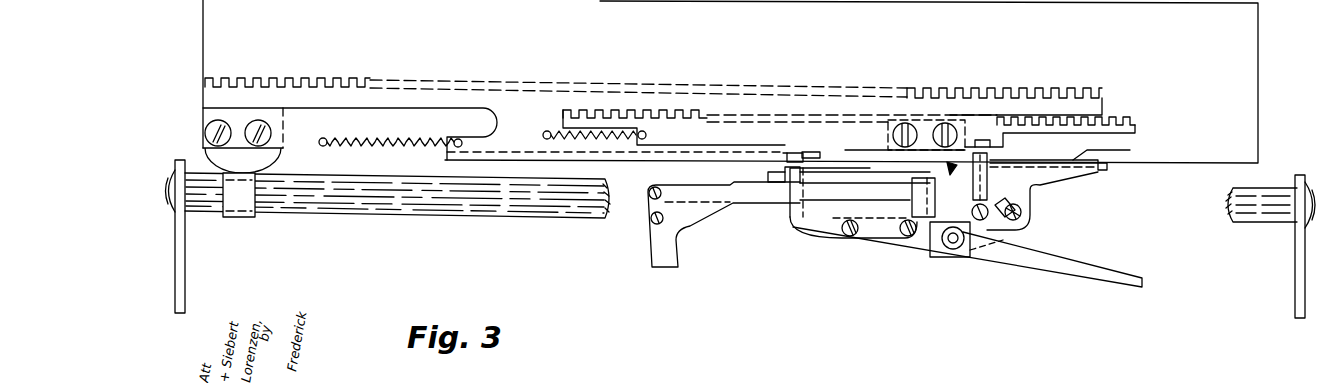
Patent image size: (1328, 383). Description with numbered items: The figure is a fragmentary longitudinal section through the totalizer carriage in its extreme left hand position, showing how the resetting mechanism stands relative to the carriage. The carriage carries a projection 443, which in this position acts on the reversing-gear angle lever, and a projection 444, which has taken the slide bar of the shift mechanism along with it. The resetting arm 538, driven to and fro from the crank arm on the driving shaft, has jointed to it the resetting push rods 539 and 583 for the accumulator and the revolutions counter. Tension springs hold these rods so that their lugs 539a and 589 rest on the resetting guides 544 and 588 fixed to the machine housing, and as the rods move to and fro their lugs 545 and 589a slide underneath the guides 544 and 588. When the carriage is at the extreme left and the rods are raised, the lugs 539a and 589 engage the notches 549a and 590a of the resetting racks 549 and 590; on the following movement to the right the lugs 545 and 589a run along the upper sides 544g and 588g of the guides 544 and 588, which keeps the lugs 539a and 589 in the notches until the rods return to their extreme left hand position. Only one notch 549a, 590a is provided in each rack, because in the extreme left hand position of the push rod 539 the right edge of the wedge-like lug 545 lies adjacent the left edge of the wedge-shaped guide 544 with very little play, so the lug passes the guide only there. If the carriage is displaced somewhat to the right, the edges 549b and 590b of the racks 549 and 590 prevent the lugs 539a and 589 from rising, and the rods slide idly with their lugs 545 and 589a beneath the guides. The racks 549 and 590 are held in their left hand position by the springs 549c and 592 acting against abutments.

The carriage projection 443 is at (938, 257).
The carriage projection 444 is at (248, 212).
The resetting arm 538 is at (650, 248).
The resetting push rod 539 is at (693, 195).
The lug 539a is at (826, 180).
The resetting guide 544 is at (853, 170).
The upper side of resetting guide 544g is at (890, 168).
The lug 545 is at (768, 175).
The resetting rack 549 is at (637, 162).
The notch 549a is at (802, 153).
The edge of rack 549b is at (783, 153).
The spring 549c is at (380, 140).
The resetting push rod 583 is at (885, 203).
The resetting guide 588 is at (1053, 167).
The upper side of resetting guide 588g is at (1130, 150).
The lug 589 is at (983, 152).
The lug 589a is at (950, 163).
The resetting rack 590 is at (1133, 123).
The notch 590a is at (985, 142).
The edge of rack 590b is at (845, 150).
The spring 592 is at (585, 137).